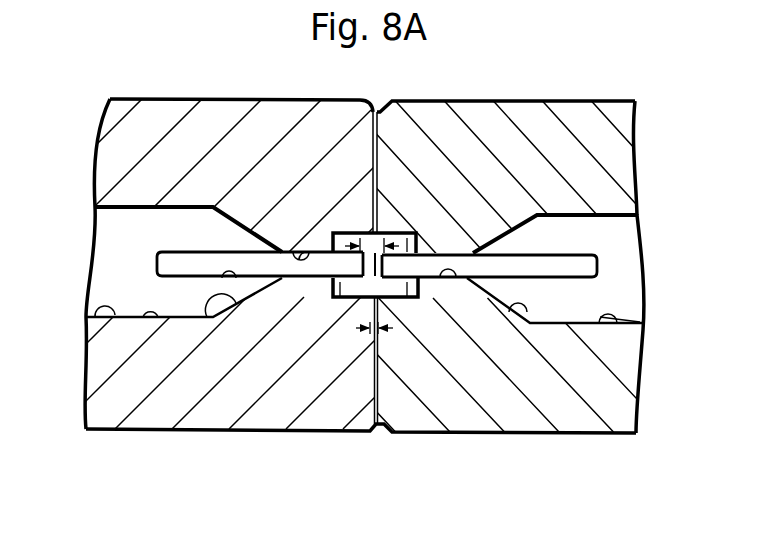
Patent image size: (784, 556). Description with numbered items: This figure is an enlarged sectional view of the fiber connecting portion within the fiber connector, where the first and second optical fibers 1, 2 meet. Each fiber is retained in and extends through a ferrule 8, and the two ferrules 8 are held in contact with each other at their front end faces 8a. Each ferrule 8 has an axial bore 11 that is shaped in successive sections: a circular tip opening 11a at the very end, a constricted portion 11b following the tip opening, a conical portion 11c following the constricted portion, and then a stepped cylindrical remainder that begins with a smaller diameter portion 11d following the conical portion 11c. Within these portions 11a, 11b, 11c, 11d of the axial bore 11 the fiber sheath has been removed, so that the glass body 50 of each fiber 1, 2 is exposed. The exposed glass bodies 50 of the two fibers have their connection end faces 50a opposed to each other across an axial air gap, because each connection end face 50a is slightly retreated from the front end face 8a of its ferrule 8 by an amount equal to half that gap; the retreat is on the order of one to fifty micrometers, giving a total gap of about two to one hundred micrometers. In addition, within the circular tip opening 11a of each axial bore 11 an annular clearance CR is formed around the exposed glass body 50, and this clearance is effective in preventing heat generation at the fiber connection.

The first optical fiber 1 is at (552, 245).
The second optical fiber 2 is at (195, 243).
The ferrule 8 is at (171, 95).
The front end face 8a is at (372, 186).
The axial bore 11 is at (117, 313).
The circular tip opening 11a is at (337, 300).
The constricted portion 11b is at (304, 258).
The conical portion 11c is at (207, 316).
The smaller diameter portion 11d is at (143, 316).
The glass body 50 is at (199, 245).
The connection end face 50a is at (414, 232).
The annular clearance CR is at (349, 232).